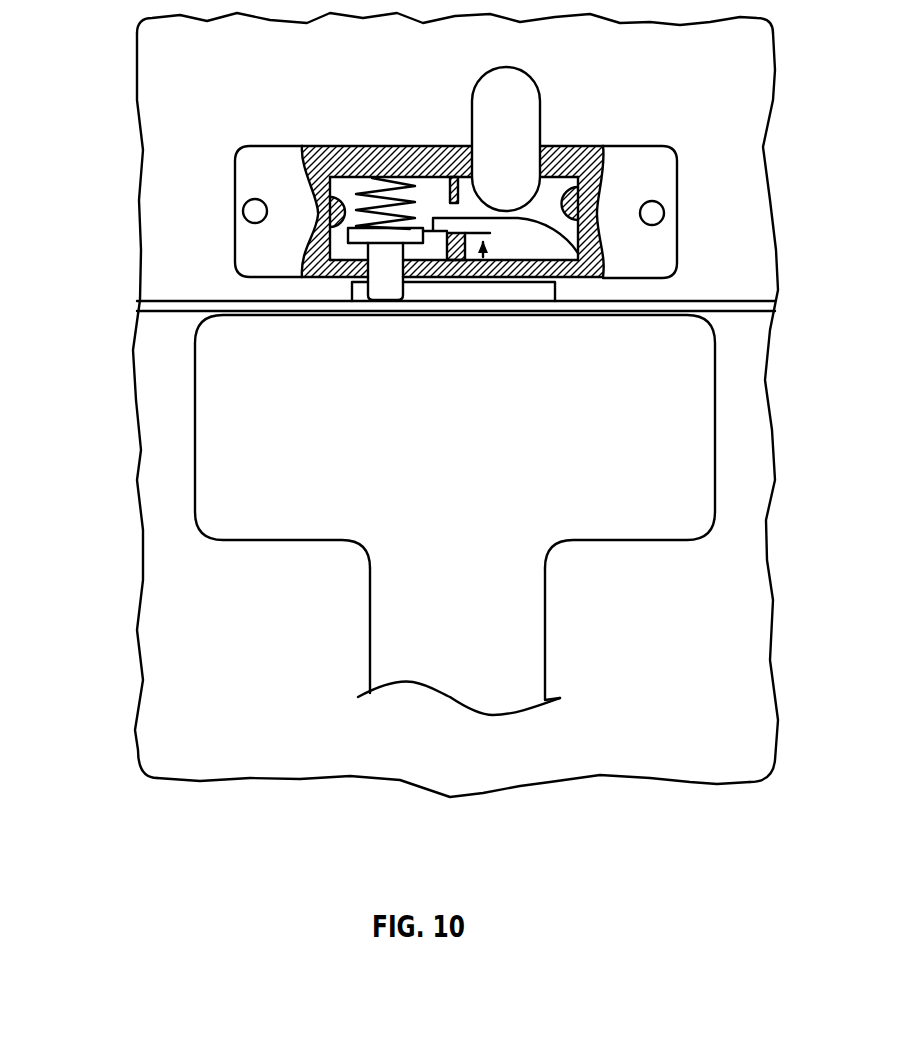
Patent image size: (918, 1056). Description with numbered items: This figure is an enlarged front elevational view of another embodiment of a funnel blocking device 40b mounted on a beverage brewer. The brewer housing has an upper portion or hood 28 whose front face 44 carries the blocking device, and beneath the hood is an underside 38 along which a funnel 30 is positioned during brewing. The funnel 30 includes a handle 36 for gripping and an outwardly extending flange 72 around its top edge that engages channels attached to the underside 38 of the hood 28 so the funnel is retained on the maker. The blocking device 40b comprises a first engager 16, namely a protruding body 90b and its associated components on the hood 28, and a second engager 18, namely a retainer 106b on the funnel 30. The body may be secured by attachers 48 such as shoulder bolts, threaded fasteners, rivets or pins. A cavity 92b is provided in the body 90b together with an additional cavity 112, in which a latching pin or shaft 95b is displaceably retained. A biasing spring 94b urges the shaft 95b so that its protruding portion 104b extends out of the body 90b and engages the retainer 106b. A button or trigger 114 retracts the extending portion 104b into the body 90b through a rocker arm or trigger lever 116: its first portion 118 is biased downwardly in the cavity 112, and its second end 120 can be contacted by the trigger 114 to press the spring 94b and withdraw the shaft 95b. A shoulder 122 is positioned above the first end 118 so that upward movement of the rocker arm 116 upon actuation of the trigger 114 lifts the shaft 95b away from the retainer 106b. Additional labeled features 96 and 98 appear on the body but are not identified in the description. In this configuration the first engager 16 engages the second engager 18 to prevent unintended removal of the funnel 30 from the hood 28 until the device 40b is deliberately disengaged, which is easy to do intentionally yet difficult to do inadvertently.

The first engager 16 is at (225, 136).
The second engager 18 is at (584, 347).
The hood 28 is at (126, 143).
The funnel 30 is at (160, 582).
The handle 36 is at (368, 645).
The underside 38 is at (174, 306).
The funnel blocking device 40b is at (669, 121).
The front face 44 is at (157, 50).
The attacher 48 is at (243, 212).
The outwardly extending flange 72 is at (172, 300).
The protruding body 90b is at (236, 186).
The cavity 92b is at (603, 153).
The biasing spring 94b is at (388, 175).
The latching pin or shaft 95b is at (304, 243).
The top wall 96 is at (555, 147).
The right flange 98 is at (678, 288).
The protruding portion 104b is at (378, 297).
The retainer 106b is at (558, 300).
The second cavity 112 is at (307, 152).
The button or trigger 114 is at (505, 66).
The rocker arm or trigger lever 116 is at (506, 284).
The first portion 118 is at (440, 284).
The second end 120 is at (606, 256).
The shoulder 122 is at (304, 191).